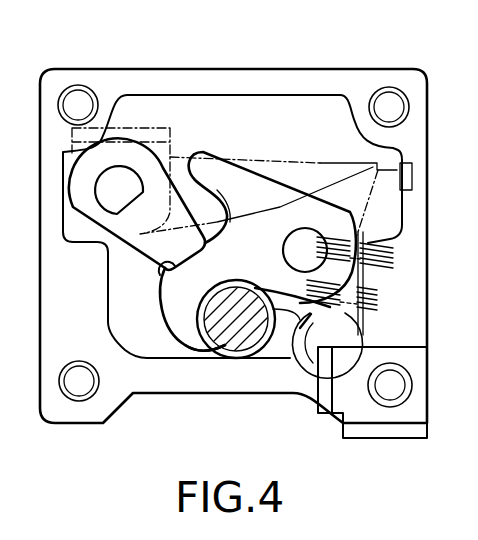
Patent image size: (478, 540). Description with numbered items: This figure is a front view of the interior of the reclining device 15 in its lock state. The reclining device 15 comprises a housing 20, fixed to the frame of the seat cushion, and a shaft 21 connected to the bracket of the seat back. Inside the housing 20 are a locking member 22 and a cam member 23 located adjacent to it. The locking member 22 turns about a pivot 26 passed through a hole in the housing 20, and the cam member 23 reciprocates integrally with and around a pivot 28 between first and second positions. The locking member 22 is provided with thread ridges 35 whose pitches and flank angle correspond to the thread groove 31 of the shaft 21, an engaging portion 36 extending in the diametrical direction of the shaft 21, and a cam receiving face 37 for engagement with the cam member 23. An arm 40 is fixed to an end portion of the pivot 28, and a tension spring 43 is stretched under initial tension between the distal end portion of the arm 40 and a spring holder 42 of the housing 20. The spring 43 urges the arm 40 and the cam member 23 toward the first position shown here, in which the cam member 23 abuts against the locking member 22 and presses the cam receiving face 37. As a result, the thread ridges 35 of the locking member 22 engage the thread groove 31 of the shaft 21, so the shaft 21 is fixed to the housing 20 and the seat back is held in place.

The reclining device 15 is at (104, 60).
The housing 20 is at (325, 69).
The shaft 21 is at (242, 328).
The locking member 22 is at (163, 307).
The cam member 23 is at (175, 203).
The pivot 26 is at (297, 247).
The pivot 28 is at (107, 205).
The thread groove 31 is at (215, 345).
The thread ridges 35 is at (202, 335).
The engaging portion 36 is at (240, 160).
The cam receiving face 37 is at (158, 265).
The arm 40 is at (322, 162).
The spring holder 42 is at (303, 402).
The tension spring 43 is at (388, 267).